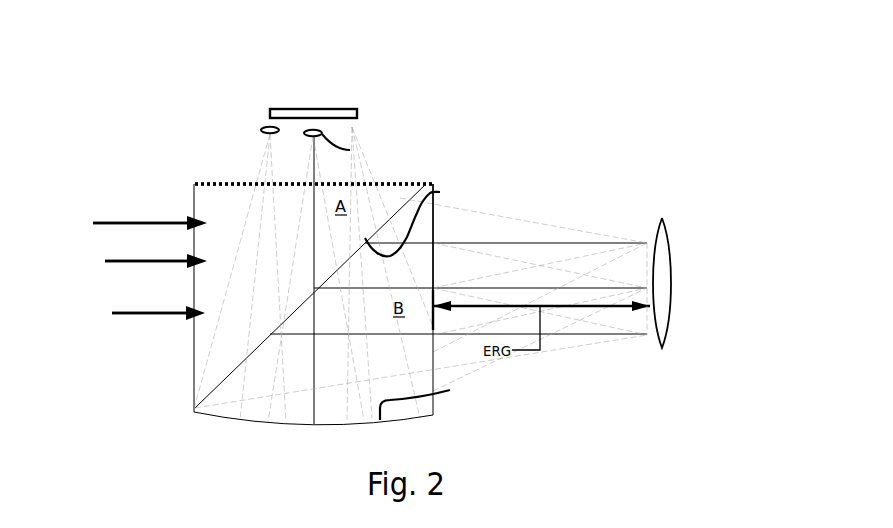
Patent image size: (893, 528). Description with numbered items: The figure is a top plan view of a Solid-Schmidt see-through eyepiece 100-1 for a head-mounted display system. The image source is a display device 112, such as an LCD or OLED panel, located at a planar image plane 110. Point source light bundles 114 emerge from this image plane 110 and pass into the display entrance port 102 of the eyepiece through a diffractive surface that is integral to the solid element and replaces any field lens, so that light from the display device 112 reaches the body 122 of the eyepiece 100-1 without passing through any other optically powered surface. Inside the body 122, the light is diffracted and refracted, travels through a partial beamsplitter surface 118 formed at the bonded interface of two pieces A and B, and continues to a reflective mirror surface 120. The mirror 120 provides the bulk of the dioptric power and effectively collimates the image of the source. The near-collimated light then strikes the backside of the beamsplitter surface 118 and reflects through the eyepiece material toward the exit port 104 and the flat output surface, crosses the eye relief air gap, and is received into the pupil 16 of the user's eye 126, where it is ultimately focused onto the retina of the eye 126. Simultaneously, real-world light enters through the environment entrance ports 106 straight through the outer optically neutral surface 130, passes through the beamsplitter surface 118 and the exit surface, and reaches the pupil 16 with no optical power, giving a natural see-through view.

The Solid-Schmidt eyepiece 100-1 is at (603, 151).
The display device 112 is at (350, 109).
The image plane 110 is at (352, 119).
The point source light bundles 114 is at (278, 132).
The display entrance port 102 is at (332, 184).
The body 122 is at (186, 177).
The environment entrance ports 106 is at (194, 282).
The outer optically neutral surface 130 is at (141, 268).
The partial beamsplitter surface 118 is at (440, 192).
The exit port 104 is at (433, 228).
The eye 126 is at (650, 268).
The pupil 16 is at (662, 218).
The reflective mirror surface 120 is at (450, 390).